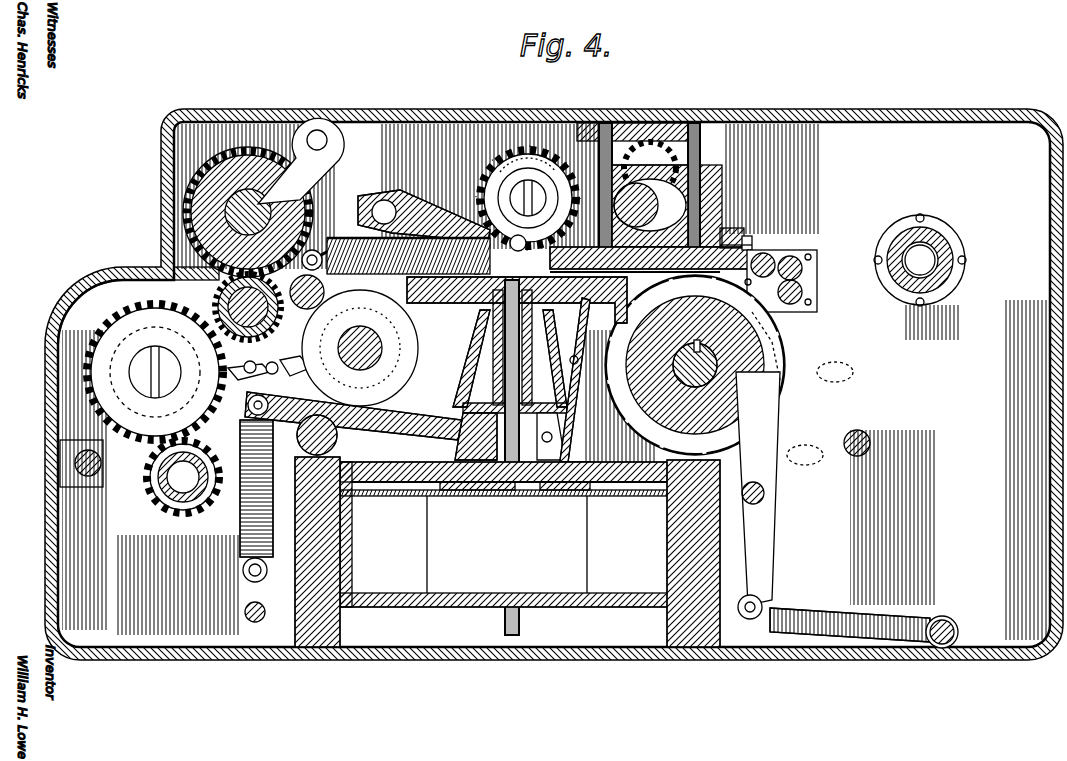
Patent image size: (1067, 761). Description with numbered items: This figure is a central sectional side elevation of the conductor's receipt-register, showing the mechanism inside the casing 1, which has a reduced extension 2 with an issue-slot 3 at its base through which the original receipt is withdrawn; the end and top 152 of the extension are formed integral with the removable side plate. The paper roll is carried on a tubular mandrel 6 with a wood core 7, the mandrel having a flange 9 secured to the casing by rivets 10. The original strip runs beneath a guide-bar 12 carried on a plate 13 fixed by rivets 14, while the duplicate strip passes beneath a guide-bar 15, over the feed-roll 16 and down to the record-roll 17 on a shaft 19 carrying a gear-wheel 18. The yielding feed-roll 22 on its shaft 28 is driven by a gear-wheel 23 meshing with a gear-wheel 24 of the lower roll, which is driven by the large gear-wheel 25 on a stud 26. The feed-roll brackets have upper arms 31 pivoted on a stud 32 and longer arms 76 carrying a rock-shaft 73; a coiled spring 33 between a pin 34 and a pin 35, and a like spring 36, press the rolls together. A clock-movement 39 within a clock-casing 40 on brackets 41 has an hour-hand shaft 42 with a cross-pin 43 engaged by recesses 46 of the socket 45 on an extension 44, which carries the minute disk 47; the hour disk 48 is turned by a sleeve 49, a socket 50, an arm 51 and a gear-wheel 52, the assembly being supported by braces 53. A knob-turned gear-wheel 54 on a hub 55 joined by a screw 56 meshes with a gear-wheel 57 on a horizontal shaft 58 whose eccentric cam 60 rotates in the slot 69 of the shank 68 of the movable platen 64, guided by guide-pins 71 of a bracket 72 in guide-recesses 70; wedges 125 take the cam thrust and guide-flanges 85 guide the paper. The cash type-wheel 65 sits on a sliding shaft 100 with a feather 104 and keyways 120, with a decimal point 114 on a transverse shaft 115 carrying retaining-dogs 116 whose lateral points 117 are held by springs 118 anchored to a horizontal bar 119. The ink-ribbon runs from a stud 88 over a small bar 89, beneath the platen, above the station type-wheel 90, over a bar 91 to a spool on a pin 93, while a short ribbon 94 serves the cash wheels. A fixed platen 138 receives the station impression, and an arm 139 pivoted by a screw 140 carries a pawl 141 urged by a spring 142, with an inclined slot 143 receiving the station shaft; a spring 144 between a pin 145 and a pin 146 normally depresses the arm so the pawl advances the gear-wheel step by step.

The casing 1 is at (930, 122).
The reduced extension 2 is at (80, 312).
The issue-slot 3 is at (172, 276).
The tubular mandrel 6 is at (945, 252).
The wood core 7 is at (950, 268).
The flange 9 is at (935, 240).
The rivets 10 is at (926, 208).
The roller or guide-bar 12 is at (770, 256).
The plate 13 is at (818, 258).
The rivets 14 is at (812, 303).
The guide-bar 15 is at (796, 260).
The feed-roll 16 is at (214, 328).
The spool or record-roll 17 is at (174, 504).
The gear-wheel 18 is at (190, 512).
The shaft 19 is at (183, 477).
The feed-roll 22 is at (232, 200).
The gear-wheel 23 is at (186, 172).
The gear-wheel 24 is at (226, 340).
The gear-wheel 25 is at (128, 348).
The stud 26 is at (150, 376).
The shaft 28 is at (240, 216).
The upper arms 31 is at (338, 122).
The stud 32 is at (318, 130).
The coiled spring 33 is at (380, 246).
The pin 34 is at (322, 252).
The pin 35 is at (489, 262).
The spring 36 is at (527, 243).
The clock-movement 39 is at (510, 534).
The clock-casing 40 is at (668, 572).
The brackets 41 is at (322, 650).
The hour-hand shaft 42 is at (522, 522).
The cross-pin 43 is at (484, 488).
The hour-hand shaft extension 44 is at (515, 351).
The socket 45 is at (444, 482).
The recesses 46 is at (545, 486).
The circular disk 47 is at (540, 320).
The circular disk 48 is at (446, 305).
The sleeve 49 is at (480, 348).
The socket 50 is at (572, 418).
The arm 51 is at (566, 448).
The gear-wheel 52 is at (588, 492).
The braces 53 is at (563, 386).
The gear-wheel 54 is at (528, 152).
The hub 55 is at (528, 198).
The screw 56 is at (540, 198).
The gear-wheel 57 is at (640, 140).
The horizontal shaft 58 is at (650, 168).
The eccentric cam 60 is at (700, 168).
The movable platen 64 is at (742, 232).
The type-wheel 65 is at (708, 356).
The shank 68 is at (746, 220).
The horizontal slot 69 is at (650, 205).
The guide-recesses 70 is at (725, 200).
The guide-pins 71 is at (606, 123).
The bracket 72 is at (694, 123).
The rock-shaft 73 is at (384, 212).
The longer arms 76 is at (396, 202).
The guide-flanges 85 is at (752, 242).
The pin or stud 88 is at (871, 442).
The small bar 89 is at (802, 290).
The station-number type-wheel 90 is at (360, 348).
The bar or roll 91 is at (314, 300).
The pin 93 is at (266, 613).
The short ribbon 94 is at (695, 365).
The sliding shaft 100 is at (718, 368).
The feather 104 is at (700, 346).
The period or decimal point 114 is at (760, 462).
The transverse shaft 115 is at (766, 492).
The retaining-dogs 116 is at (776, 545).
The lateral points 117 is at (835, 372).
The springs 118 is at (806, 614).
The horizontal bar 119 is at (950, 622).
The keyways 120 is at (762, 322).
The wedges 125 is at (740, 245).
The fixed platen 138 is at (408, 266).
The arm 139 is at (440, 390).
The screw or rivet 140 is at (589, 455).
The pawl 141 is at (236, 376).
The spring 142 is at (339, 390).
The inclined slot 143 is at (307, 353).
The spring 144 is at (240, 552).
The pin 145 is at (250, 414).
The pin 146 is at (252, 582).
The end and top of the extension 152 is at (56, 392).